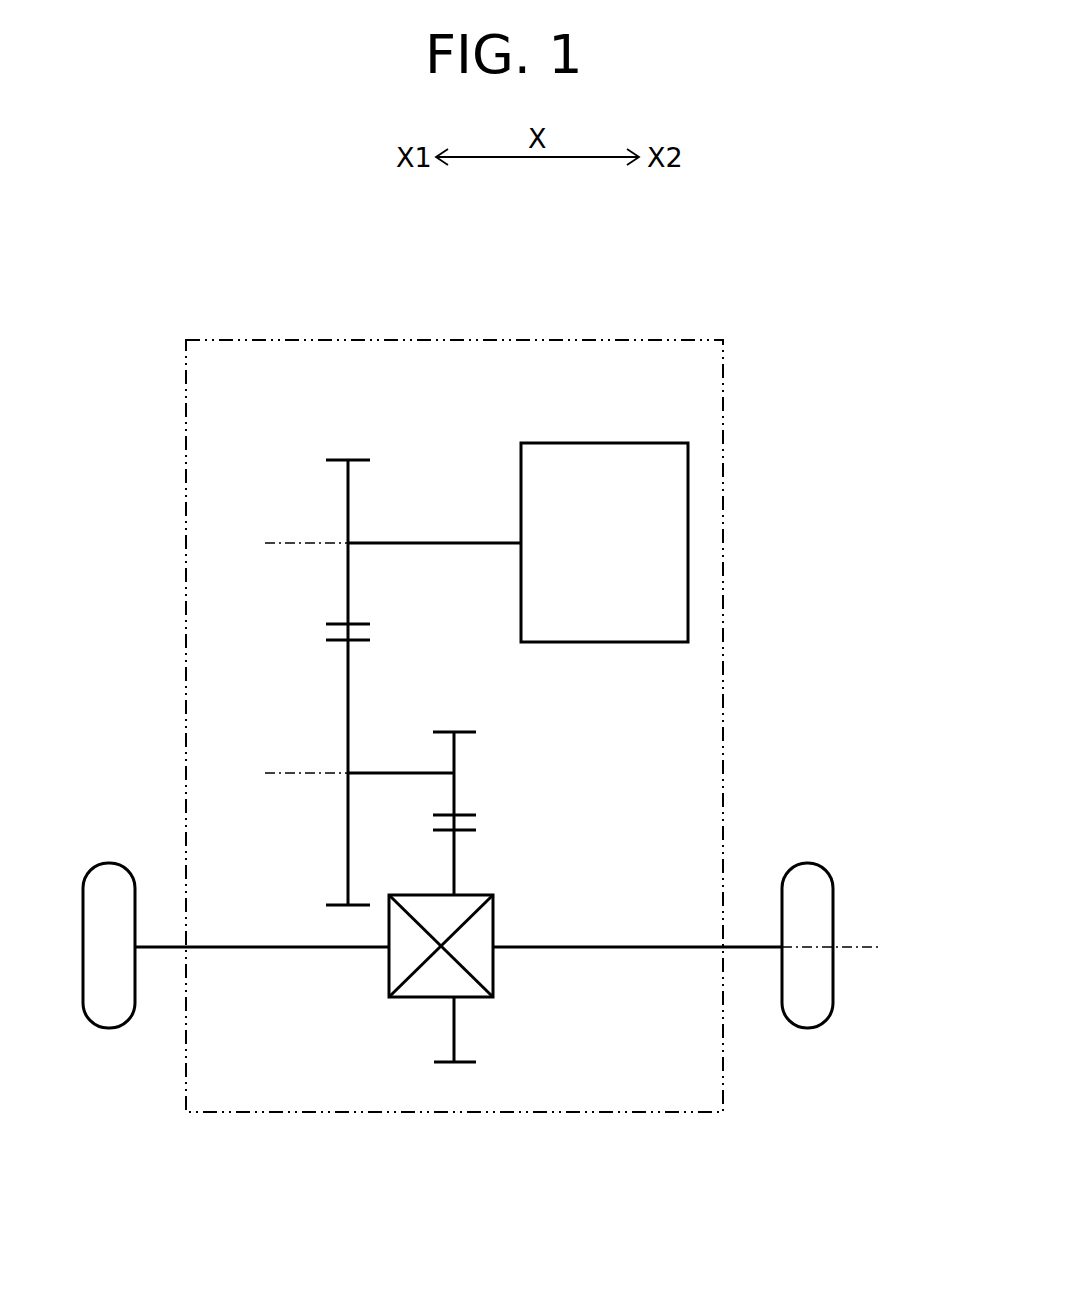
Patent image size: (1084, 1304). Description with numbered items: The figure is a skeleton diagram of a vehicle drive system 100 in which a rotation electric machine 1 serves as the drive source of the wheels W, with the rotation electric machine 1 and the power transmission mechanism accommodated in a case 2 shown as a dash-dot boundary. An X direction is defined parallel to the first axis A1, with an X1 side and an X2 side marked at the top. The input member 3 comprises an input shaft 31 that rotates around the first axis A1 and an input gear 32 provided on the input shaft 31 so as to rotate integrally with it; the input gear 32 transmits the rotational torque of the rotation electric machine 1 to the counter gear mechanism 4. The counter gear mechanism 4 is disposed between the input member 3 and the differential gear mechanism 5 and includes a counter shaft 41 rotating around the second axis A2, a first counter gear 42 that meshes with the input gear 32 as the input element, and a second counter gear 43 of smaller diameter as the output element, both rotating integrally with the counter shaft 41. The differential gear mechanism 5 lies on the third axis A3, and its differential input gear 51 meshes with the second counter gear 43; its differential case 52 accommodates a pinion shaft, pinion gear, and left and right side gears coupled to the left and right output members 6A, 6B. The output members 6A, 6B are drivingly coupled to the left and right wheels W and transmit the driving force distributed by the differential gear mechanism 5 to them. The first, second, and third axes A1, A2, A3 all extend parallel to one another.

The vehicle drive system 100 is at (752, 286).
The case 2 is at (727, 402).
The rotation electric machine 1 is at (647, 442).
The input member 3 is at (465, 436).
The input shaft 31 is at (425, 541).
The input gear 32 is at (343, 457).
The first counter gear 42 is at (336, 907).
The counter gear mechanism 4 is at (513, 748).
The counter shaft 41 is at (400, 771).
The second counter gear 43 is at (466, 730).
The differential gear mechanism 5 is at (500, 879).
The differential input gear 51 is at (448, 1064).
The differential case 52 is at (403, 998).
The left output member 6A is at (243, 948).
The right output member 6B is at (663, 948).
The first axis A1 is at (286, 543).
The second axis A2 is at (286, 773).
The third axis A3 is at (850, 947).
The wheels W is at (112, 872).